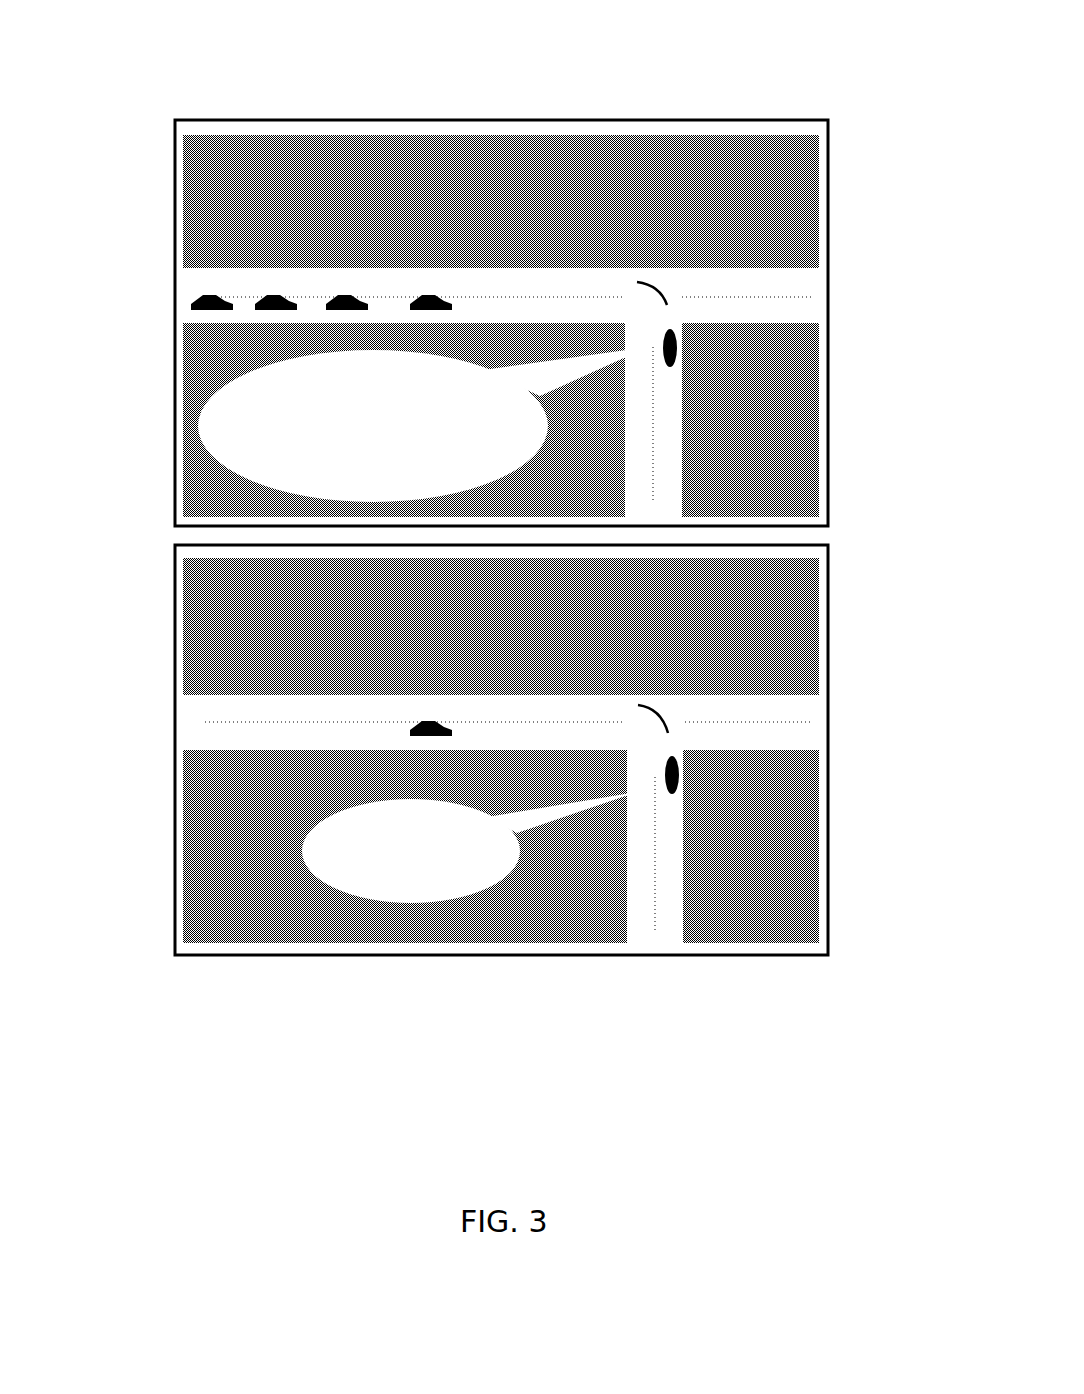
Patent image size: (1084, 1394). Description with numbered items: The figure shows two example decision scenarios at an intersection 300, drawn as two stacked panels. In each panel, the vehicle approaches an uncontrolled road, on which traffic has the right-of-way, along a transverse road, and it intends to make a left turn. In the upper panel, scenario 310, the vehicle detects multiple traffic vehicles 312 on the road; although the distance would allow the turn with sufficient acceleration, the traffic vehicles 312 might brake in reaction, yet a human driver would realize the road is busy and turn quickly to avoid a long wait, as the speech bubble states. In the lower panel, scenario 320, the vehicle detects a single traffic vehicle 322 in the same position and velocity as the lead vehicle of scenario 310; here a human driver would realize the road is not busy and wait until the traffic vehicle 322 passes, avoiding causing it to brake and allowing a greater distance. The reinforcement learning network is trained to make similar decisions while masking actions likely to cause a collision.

The intersection 300 is at (503, 488).
The scenario 310 is at (510, 324).
The traffic vehicles 312 is at (405, 290).
The scenario 320 is at (503, 751).
The traffic vehicle 322 is at (413, 710).